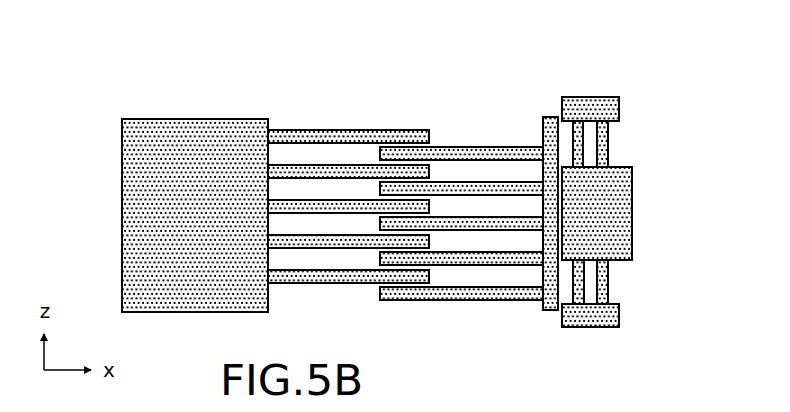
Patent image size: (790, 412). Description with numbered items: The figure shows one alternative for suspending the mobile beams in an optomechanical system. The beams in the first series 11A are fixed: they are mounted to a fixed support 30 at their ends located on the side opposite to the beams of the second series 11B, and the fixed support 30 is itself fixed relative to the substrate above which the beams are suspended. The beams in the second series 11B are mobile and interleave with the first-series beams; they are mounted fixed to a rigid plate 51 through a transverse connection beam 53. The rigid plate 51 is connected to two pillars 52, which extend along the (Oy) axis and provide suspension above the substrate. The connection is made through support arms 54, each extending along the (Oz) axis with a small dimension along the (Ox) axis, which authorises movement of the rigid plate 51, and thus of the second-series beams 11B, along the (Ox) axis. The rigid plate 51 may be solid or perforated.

The fixed support 30 is at (130, 193).
The beams in the first series 11A is at (270, 114).
The beams in the second series 11B is at (378, 314).
The transverse connection beam 53 is at (547, 117).
The pillars 52 is at (593, 103).
The support arms 54 is at (585, 153).
The rigid plate 51 is at (622, 212).